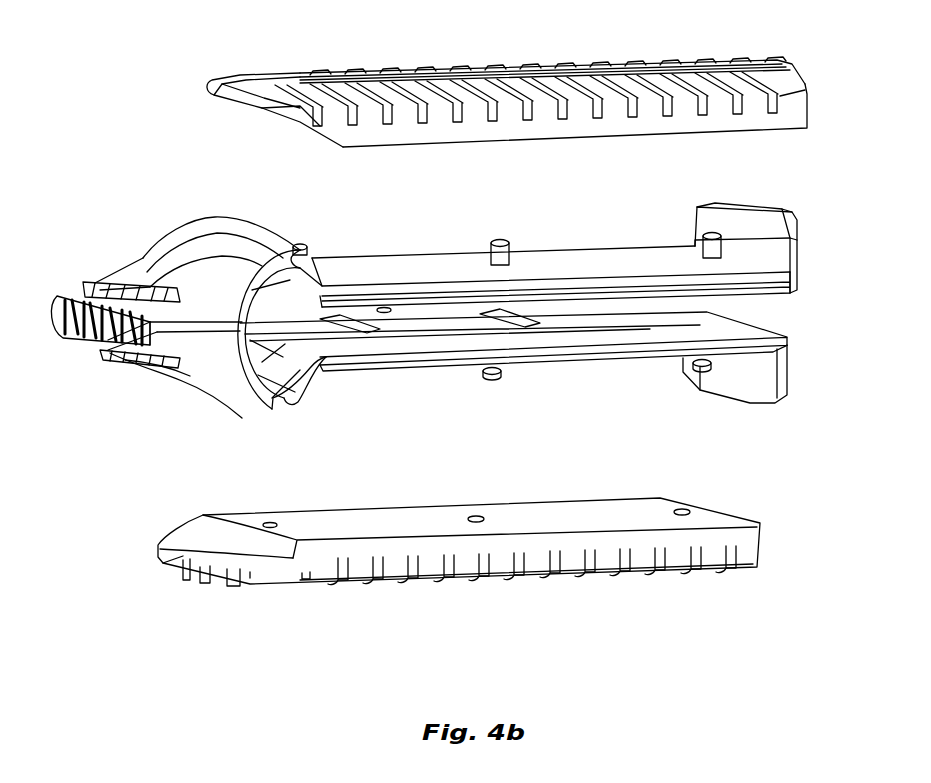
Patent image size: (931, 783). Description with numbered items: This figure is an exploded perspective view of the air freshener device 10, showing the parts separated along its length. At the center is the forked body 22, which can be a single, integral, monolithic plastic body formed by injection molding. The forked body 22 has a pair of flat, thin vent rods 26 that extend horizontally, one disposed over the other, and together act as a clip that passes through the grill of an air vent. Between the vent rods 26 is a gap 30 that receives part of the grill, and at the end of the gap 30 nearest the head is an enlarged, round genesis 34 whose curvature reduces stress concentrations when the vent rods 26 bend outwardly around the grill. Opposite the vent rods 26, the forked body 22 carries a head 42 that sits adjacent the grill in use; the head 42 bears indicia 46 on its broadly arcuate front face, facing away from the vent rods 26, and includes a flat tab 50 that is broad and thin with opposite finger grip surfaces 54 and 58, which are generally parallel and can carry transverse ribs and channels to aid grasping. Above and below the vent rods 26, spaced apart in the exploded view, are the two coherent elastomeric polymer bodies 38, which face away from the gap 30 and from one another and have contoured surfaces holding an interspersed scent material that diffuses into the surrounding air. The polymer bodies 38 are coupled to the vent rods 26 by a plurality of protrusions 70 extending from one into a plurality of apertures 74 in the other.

The air freshener device 10 is at (243, 620).
The forked body 22 is at (538, 360).
The vent rods 26 is at (580, 262).
The gap 30 is at (743, 305).
The enlarged genesis 34 is at (248, 367).
The coherent elastomeric polymer bodies 38 is at (497, 74).
The head 42 is at (152, 252).
The indicia 46 is at (60, 340).
The flat tab 50 is at (173, 333).
The finger grip surface 54 is at (97, 285).
The finger grip surface 58 is at (78, 353).
The protrusions 70 is at (507, 240).
The apertures 74 is at (478, 516).